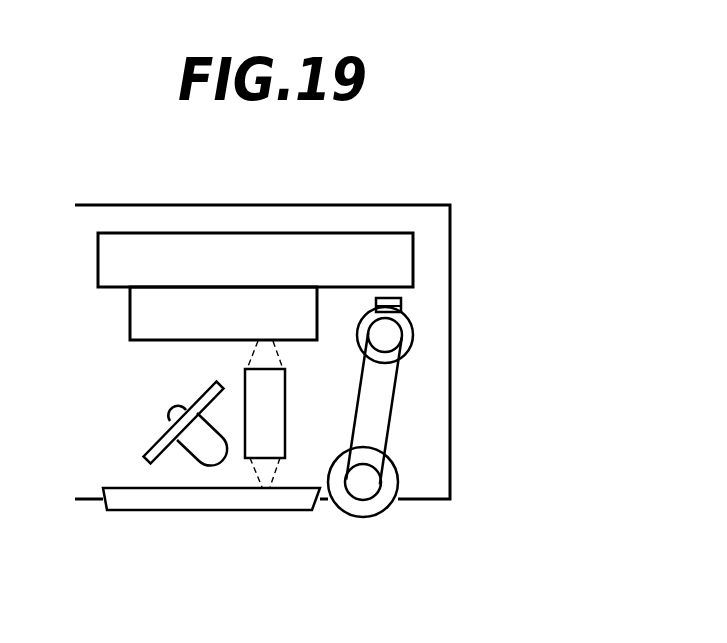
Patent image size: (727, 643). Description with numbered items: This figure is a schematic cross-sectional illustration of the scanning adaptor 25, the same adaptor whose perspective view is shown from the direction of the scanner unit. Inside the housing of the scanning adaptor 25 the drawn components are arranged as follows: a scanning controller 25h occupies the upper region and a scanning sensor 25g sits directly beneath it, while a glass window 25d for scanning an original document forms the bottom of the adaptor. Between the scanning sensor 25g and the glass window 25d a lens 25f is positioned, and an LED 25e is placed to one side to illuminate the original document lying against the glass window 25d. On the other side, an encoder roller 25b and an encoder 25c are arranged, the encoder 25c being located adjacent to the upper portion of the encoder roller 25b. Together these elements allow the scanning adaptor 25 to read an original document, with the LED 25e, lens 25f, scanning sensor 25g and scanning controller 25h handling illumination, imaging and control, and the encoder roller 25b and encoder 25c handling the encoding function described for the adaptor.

The scanning adaptor 25 is at (472, 370).
The encoder roller 25b is at (373, 507).
The encoder 25c is at (401, 300).
The glass window 25d is at (150, 511).
The LED 25e is at (174, 416).
The lens 25f is at (279, 407).
The scanning sensor 25g is at (293, 295).
The scanning controller 25h is at (158, 247).